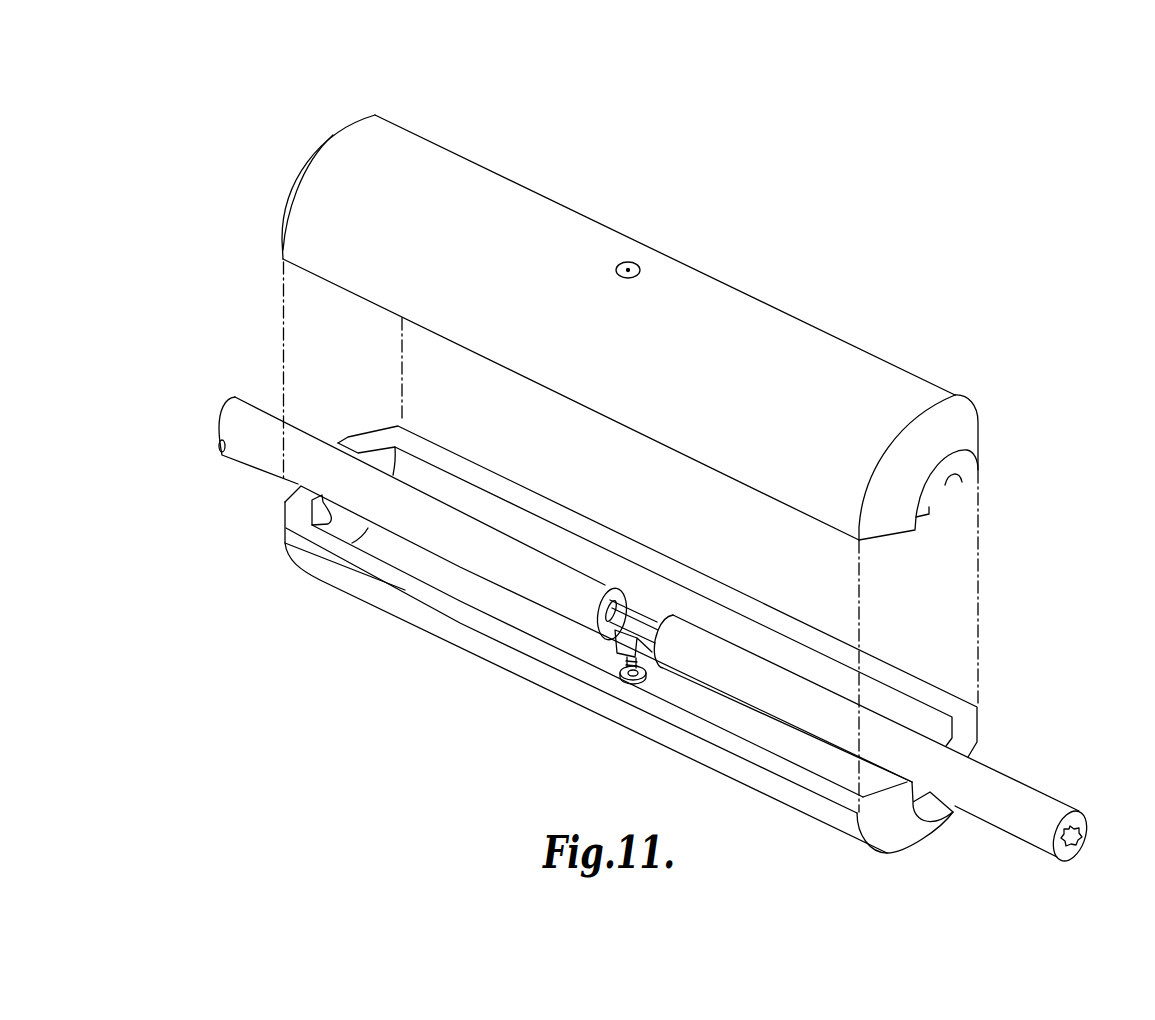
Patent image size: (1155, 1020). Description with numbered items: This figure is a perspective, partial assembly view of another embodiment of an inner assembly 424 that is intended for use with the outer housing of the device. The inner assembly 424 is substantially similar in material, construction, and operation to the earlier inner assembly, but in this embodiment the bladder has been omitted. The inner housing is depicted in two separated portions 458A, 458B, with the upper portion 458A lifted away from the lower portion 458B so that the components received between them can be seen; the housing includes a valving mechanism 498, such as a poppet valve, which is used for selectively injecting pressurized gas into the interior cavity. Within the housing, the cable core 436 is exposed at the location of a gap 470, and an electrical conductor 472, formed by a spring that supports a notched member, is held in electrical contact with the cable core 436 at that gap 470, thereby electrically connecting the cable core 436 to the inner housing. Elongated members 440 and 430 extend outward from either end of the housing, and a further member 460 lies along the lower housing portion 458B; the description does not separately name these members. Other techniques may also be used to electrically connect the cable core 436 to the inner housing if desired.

The inner assembly 424 is at (998, 245).
The upper housing body 458A is at (888, 367).
The lower housing body 458B is at (320, 580).
The valving mechanism 498 is at (628, 262).
The first rod 440 is at (255, 457).
The rod channel 460 is at (523, 620).
The gap 470 is at (640, 606).
The cable core 436 is at (657, 620).
The electrical conductor 472 is at (651, 682).
The second rod 430 is at (1036, 777).